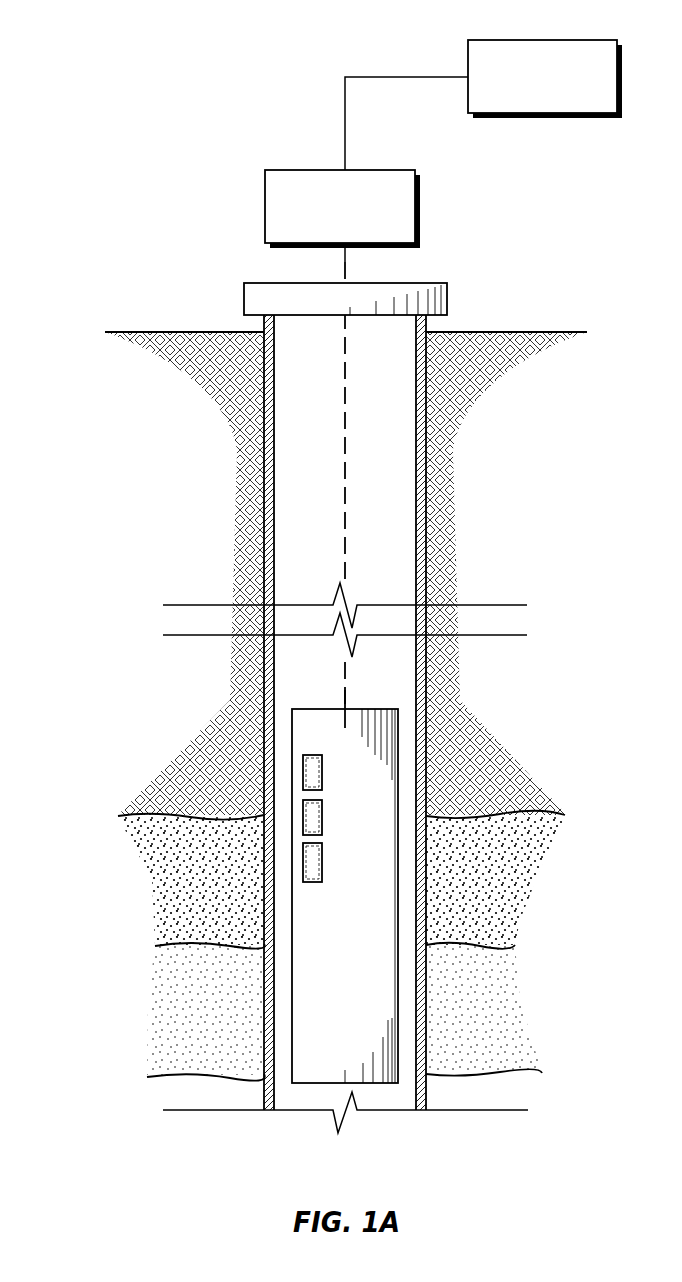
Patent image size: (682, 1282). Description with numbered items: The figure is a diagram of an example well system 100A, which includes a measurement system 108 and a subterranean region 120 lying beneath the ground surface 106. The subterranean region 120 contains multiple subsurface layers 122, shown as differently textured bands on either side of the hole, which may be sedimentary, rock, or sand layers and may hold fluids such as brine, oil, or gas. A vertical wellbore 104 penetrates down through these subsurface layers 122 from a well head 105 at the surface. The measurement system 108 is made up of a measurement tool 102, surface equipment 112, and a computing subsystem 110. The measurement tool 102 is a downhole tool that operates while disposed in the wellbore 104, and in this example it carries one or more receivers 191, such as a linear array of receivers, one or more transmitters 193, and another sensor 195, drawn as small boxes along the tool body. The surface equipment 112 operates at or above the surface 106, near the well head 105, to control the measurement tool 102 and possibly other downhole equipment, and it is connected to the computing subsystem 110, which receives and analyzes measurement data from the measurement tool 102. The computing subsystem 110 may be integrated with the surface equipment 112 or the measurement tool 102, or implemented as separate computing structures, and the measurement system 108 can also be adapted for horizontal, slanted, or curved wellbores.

The well system 100A is at (124, 96).
The measurement tool 102 is at (365, 948).
The wellbore 104 is at (264, 508).
The well head 105 is at (244, 300).
The ground surface 106 is at (527, 332).
The measurement system 108 is at (551, 239).
The computing subsystem 110 is at (495, 40).
The surface equipment 112 is at (290, 170).
The subterranean region 120 is at (116, 894).
The subsurface layers 122 is at (562, 799).
The receivers 191 is at (303, 772).
The transmitters 193 is at (303, 816).
The sensor 195 is at (303, 862).